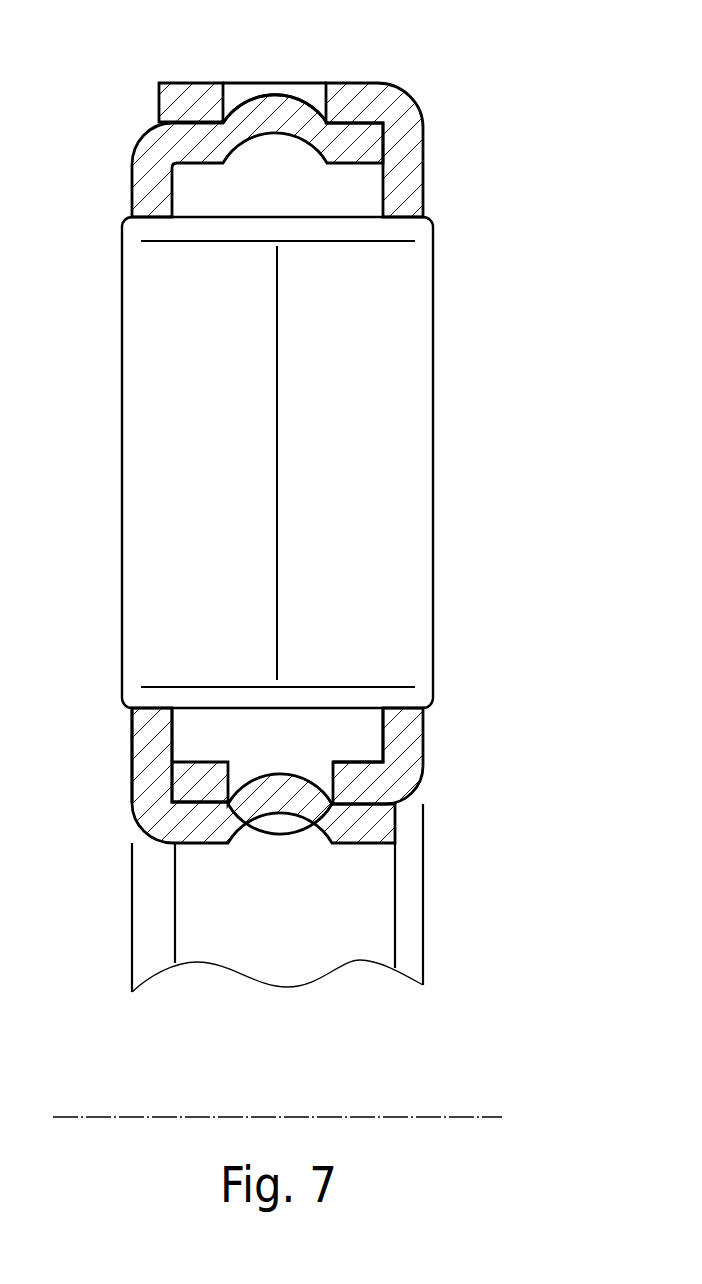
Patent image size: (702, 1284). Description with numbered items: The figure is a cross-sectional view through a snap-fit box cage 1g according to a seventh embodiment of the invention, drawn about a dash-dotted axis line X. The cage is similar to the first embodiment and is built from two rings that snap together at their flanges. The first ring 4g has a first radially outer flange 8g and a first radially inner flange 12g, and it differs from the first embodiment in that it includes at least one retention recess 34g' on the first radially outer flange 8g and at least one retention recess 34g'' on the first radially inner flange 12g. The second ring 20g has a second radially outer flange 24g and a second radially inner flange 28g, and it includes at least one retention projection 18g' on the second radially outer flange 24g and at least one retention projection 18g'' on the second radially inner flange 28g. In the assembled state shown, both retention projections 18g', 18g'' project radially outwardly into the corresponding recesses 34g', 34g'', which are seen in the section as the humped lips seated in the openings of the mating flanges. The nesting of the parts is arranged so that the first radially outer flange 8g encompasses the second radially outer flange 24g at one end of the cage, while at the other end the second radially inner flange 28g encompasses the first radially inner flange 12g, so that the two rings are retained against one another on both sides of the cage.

The snap-fit box cage 1g is at (477, 120).
The first radially outer flange 8g is at (367, 100).
The second radially outer flange 24g is at (183, 150).
The retention recess 34g' is at (351, 450).
The retention projection 18g' is at (295, 61).
The first ring 4g is at (427, 743).
The second ring 20g is at (132, 743).
The second radially inner flange 28g is at (343, 823).
The first radially inner flange 12g is at (190, 778).
The retention projection 18g'' is at (280, 862).
The retention recess 34g'' is at (436, 754).
The axis of rotation X is at (458, 1117).